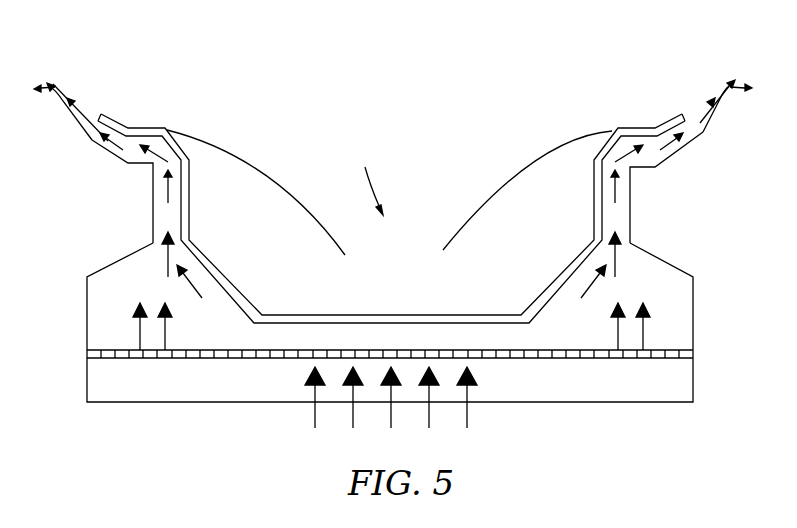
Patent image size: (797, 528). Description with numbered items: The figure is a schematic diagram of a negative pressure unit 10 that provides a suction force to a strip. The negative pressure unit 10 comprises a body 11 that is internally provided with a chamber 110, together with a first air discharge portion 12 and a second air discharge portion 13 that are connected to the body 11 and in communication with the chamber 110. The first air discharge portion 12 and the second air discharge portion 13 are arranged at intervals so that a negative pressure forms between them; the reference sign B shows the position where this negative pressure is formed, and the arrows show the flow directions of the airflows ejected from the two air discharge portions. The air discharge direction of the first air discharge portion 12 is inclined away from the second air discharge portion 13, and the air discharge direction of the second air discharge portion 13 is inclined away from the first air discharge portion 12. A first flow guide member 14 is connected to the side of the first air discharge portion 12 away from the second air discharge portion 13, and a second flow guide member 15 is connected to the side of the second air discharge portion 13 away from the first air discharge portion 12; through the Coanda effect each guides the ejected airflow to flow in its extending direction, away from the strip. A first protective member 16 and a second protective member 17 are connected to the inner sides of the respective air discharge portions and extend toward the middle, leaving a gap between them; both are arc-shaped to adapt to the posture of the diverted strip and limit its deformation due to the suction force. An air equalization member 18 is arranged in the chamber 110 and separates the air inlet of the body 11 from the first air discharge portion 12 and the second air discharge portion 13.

The negative pressure unit 10 is at (398, 53).
The body 11 is at (87, 401).
The chamber 110 is at (656, 388).
The first air discharge portion 12 is at (152, 175).
The second air discharge portion 13 is at (630, 183).
The first flow guide member 14 is at (92, 140).
The second flow guide member 15 is at (703, 133).
The first protective member 16 is at (237, 157).
The second protective member 17 is at (527, 163).
The air equalization member 18 is at (250, 358).
The position where the negative pressure is formed B is at (362, 187).